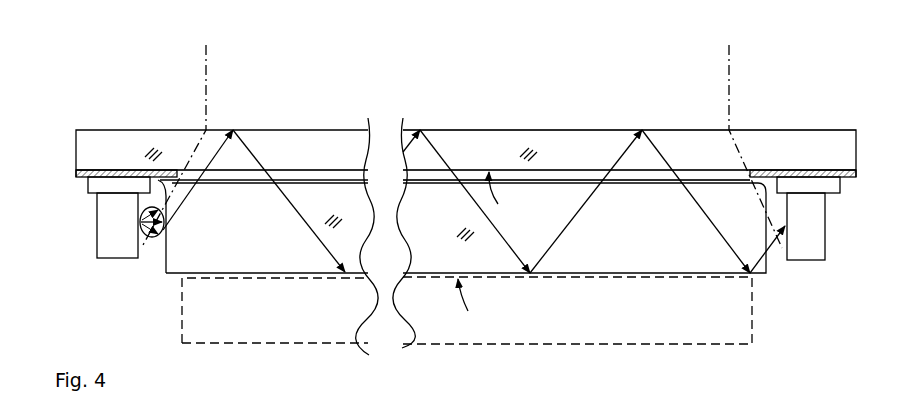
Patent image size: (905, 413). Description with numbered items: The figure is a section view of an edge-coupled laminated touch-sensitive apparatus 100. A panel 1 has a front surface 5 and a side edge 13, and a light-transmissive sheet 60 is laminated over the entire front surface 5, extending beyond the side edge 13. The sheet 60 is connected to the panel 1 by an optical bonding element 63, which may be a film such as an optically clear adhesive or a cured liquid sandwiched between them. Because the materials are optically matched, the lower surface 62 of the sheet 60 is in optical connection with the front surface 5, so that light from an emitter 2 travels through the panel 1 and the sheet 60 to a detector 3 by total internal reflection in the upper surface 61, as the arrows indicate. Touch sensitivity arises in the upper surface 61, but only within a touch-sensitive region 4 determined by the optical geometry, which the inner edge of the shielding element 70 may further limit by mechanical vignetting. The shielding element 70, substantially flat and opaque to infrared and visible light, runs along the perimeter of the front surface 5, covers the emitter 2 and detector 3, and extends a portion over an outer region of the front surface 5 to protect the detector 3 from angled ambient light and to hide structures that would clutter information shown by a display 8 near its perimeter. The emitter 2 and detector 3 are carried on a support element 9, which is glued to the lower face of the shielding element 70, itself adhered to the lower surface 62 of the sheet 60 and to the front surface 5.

The touch-sensitive apparatus 100 is at (476, 92).
The panel 1 is at (632, 242).
The emitter 2 is at (120, 218).
The detector 3 is at (808, 239).
The touch-sensitive region 4 is at (214, 63).
The front surface 5 is at (466, 175).
The display 8 is at (323, 320).
The support element 9 is at (97, 190).
The side edge 13 is at (169, 221).
The light-transmissive sheet 60 is at (585, 162).
The upper surface 61 is at (621, 127).
The lower surface 62 is at (629, 198).
The optical bonding element 63 is at (300, 172).
The shielding element 70 is at (800, 171).